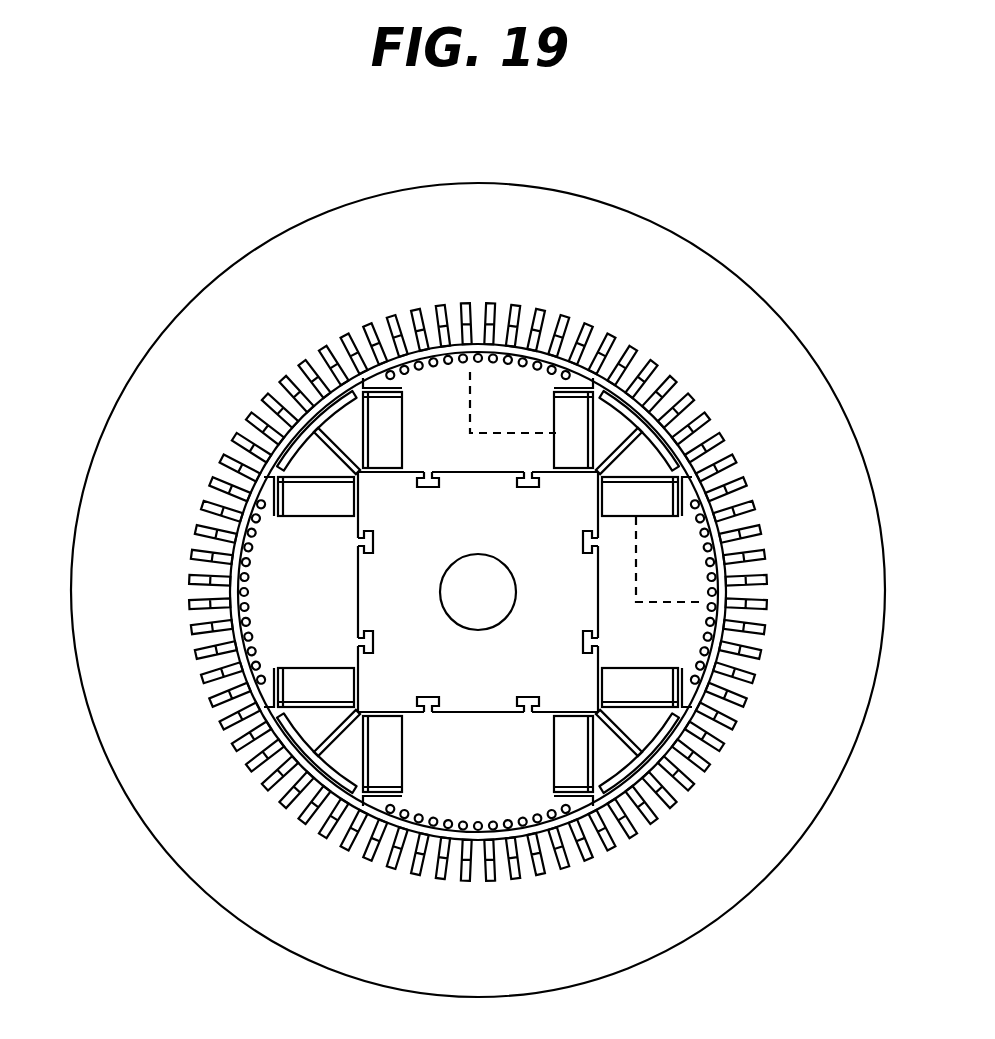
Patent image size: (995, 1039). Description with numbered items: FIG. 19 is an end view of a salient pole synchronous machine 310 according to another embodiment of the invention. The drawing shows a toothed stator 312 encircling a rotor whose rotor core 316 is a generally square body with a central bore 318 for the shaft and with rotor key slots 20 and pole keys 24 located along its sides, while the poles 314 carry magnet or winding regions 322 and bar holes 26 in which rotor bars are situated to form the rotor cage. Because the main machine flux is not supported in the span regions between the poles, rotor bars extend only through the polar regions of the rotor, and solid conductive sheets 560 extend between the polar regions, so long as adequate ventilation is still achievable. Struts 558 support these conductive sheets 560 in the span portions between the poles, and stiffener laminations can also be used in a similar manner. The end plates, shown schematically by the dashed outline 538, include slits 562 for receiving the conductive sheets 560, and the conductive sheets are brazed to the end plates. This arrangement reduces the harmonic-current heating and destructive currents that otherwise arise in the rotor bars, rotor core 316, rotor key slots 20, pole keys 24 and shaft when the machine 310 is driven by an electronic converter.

The machine 310 is at (163, 258).
The stator 312 is at (454, 253).
The rotor pole piece 314 is at (318, 418).
The rotor core 316 is at (454, 529).
The shaft bore 318 is at (454, 609).
The permanent magnets 322 is at (454, 468).
The rotor key slots 20 is at (538, 484).
The pole keys 24 is at (529, 487).
The bar holes 26 is at (707, 563).
The end plates 538 is at (612, 412).
The struts 558 is at (335, 727).
The conductive sheets 560 is at (620, 410).
The slits 562 is at (672, 432).